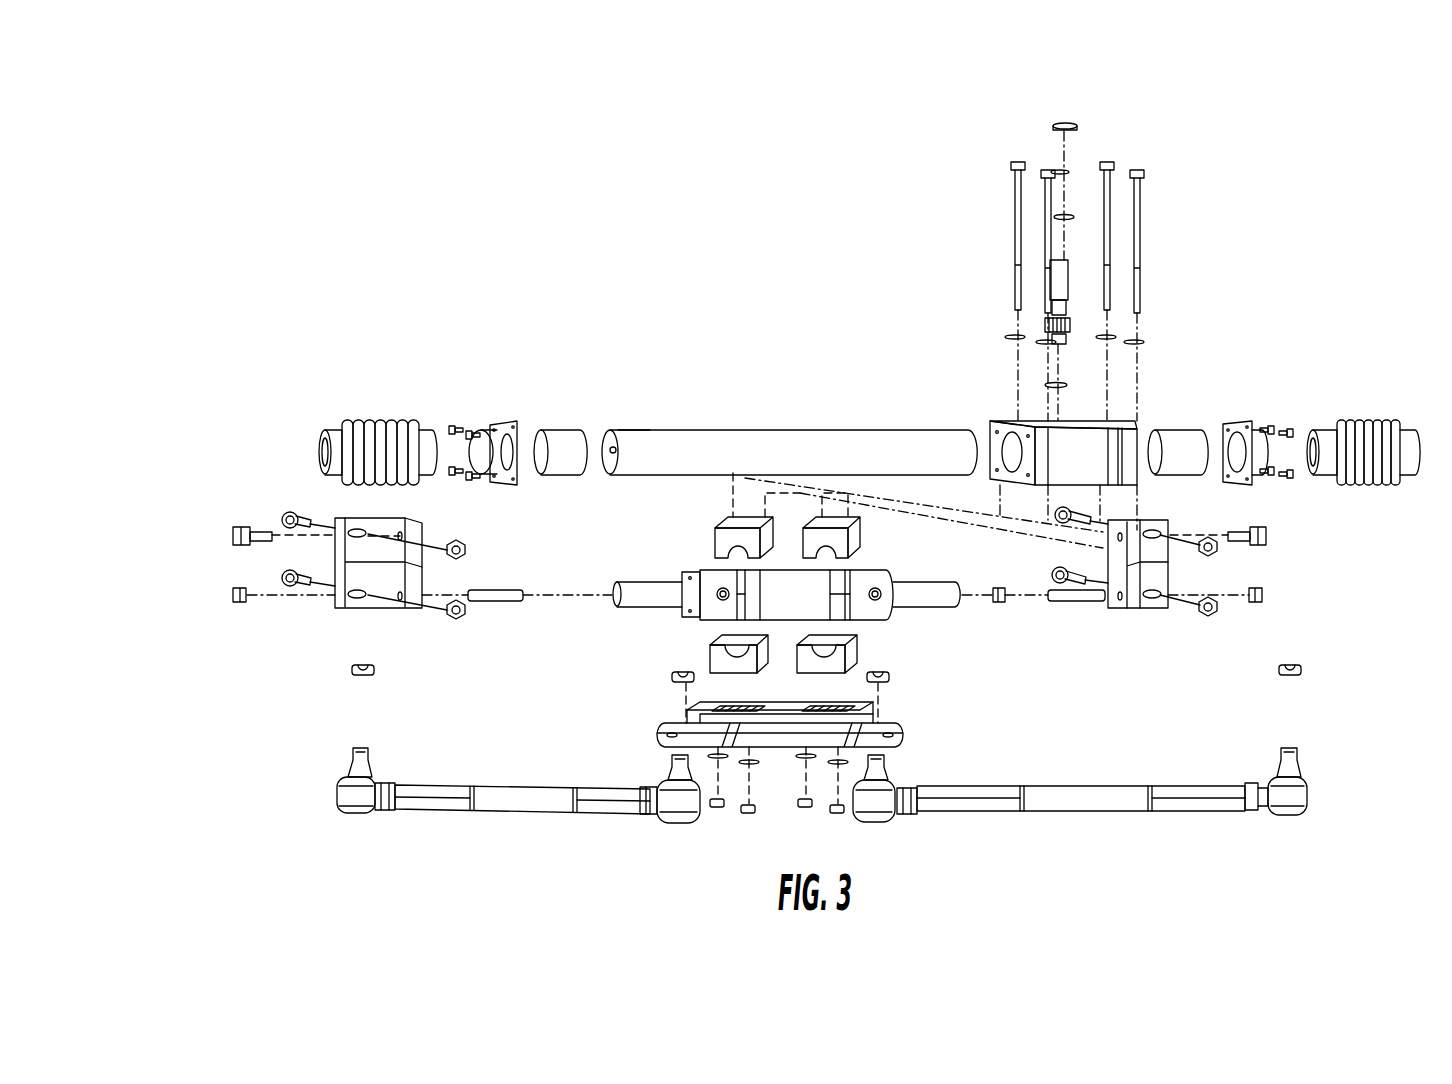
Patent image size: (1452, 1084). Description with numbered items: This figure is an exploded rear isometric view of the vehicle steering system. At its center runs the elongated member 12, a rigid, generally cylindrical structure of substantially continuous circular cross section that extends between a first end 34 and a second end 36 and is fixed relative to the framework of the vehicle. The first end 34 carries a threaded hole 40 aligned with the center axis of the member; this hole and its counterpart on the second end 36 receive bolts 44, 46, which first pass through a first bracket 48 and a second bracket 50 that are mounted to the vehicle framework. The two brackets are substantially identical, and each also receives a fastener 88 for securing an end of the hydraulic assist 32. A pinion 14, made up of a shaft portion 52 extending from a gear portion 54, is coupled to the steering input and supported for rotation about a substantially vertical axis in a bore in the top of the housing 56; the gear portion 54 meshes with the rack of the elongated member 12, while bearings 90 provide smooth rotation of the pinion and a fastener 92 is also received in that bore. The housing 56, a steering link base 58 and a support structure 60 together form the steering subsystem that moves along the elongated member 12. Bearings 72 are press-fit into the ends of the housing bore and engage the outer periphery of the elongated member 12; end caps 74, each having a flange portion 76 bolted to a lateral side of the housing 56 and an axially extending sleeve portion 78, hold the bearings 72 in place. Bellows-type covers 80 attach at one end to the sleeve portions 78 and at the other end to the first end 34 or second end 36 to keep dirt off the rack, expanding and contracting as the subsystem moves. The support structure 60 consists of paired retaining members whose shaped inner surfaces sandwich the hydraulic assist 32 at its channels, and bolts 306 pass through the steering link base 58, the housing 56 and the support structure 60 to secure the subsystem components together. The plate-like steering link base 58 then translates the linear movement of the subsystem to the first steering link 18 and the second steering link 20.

The elongated member 12 is at (770, 440).
The pinion 14 is at (1075, 288).
The first steering link 18 is at (1080, 813).
The second steering link 20 is at (526, 812).
The hydraulic assist 32 is at (905, 623).
The first end 34 is at (641, 442).
The second end 36 is at (957, 445).
The threaded hole 40 is at (611, 447).
The bolt 44 is at (250, 528).
The bolt 46 is at (1258, 528).
The first bracket 48 is at (362, 608).
The second bracket 50 is at (1145, 608).
The shaft portion 52 is at (1057, 269).
The gear portion 54 is at (1072, 327).
The housing 56 is at (996, 399).
The steering link base 58 is at (924, 739).
The support structure 60 is at (701, 646).
The bearings 72 is at (570, 462).
The end caps 74 is at (507, 410).
The flange portions 76 is at (515, 470).
The sleeve portions 78 is at (482, 452).
The covers 80 is at (383, 420).
The fastener 88 is at (505, 603).
The bearings 90 is at (1068, 212).
The fastener 92 is at (1078, 128).
The bolts 306 is at (1138, 233).